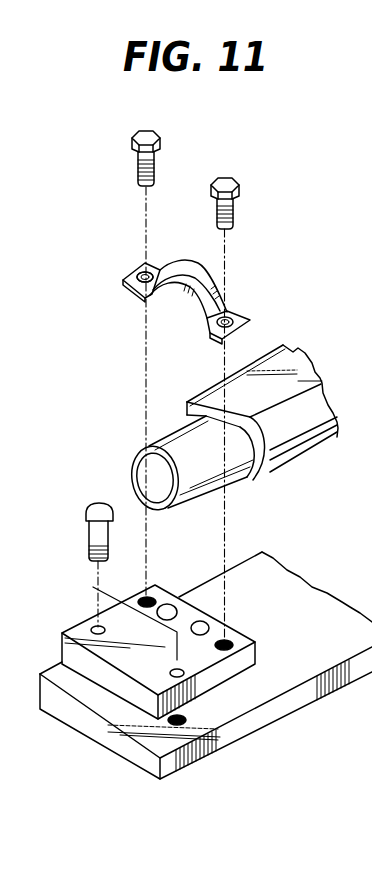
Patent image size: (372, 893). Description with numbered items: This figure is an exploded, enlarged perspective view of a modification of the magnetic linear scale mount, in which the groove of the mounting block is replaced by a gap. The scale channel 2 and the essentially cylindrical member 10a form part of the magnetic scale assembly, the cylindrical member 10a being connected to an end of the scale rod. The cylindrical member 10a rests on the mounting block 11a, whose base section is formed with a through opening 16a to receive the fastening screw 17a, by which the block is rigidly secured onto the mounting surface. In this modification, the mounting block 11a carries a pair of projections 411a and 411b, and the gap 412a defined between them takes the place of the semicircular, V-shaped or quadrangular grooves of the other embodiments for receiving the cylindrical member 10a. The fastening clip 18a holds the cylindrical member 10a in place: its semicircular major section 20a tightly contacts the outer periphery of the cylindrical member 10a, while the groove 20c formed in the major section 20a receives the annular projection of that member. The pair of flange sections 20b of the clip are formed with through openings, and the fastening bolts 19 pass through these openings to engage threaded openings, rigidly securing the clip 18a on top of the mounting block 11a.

The scale channel 2 is at (287, 364).
The cylindrical member 10a is at (163, 440).
The mounting block 11a is at (112, 684).
The through opening 16a is at (92, 628).
The fastening screw 17a is at (87, 520).
The fastening clip 18a is at (123, 281).
The fastening bolt 19 is at (160, 136).
The semicircular major section 20a is at (177, 288).
The flange section 20b is at (162, 263).
The groove 20c is at (216, 268).
The projection 411a is at (167, 604).
The projection 411b is at (203, 627).
The gap 412a is at (189, 624).